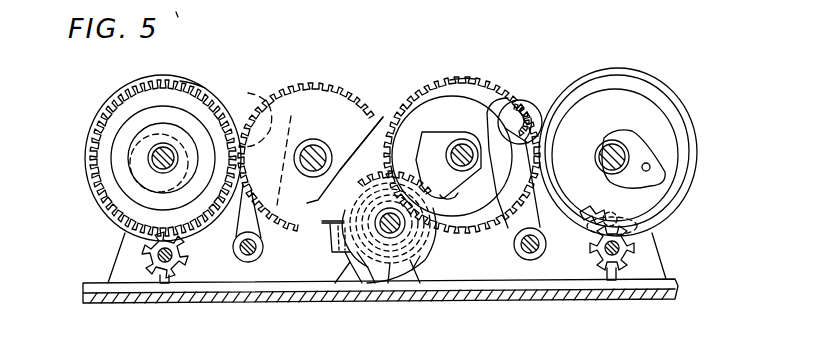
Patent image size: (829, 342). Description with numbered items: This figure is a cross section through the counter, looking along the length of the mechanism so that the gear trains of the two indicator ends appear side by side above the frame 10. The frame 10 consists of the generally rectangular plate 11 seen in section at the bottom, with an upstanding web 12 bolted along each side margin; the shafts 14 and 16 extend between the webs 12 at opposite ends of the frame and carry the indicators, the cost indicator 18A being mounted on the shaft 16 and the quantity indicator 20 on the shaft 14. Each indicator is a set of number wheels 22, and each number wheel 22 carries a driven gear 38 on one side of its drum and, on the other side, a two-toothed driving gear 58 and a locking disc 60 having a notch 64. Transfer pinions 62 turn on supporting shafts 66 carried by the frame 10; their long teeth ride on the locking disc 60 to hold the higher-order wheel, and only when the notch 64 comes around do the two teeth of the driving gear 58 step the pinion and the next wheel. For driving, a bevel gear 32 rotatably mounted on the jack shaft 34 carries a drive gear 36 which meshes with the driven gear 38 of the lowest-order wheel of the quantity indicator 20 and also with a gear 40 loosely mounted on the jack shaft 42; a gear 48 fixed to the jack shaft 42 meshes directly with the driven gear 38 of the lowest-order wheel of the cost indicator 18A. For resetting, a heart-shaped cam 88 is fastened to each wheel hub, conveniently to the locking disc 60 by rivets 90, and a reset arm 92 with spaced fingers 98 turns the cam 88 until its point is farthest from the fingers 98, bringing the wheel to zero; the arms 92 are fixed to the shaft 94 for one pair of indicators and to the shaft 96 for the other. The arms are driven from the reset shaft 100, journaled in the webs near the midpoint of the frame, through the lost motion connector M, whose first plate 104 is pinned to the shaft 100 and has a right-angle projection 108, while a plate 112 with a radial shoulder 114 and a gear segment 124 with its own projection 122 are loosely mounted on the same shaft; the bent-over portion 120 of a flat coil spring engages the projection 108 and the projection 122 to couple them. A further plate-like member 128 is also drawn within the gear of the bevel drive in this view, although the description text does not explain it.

The frame 10 is at (680, 289).
The plate 11 is at (538, 300).
The upstanding web 12 is at (657, 240).
The shaft 14 is at (600, 152).
The shaft 16 is at (150, 157).
The cost indicator 18A is at (99, 109).
The quantity indicator 20 is at (680, 102).
The number wheel 22 is at (124, 84).
The bevel gear 32 is at (438, 103).
The jack shaft 34 is at (462, 142).
The drive gear 36 is at (463, 78).
The driven gear 38 is at (190, 85).
The gear 40 is at (384, 114).
The jack shaft 42 is at (305, 144).
The gear 48 is at (276, 88).
The two-toothed driving gear 58 is at (582, 214).
The locking disc 60 is at (585, 97).
The transfer pinion 62 is at (146, 262).
The notch 64 is at (612, 216).
The supporting shaft 66 is at (157, 254).
The heart-shaped cam 88 is at (110, 178).
The rivet 90 is at (647, 163).
The reset arm 92 is at (256, 102).
The shaft 94 is at (514, 246).
The shaft 96 is at (240, 256).
The finger 98 is at (534, 112).
The reset shaft 100 is at (406, 237).
The first plate 104 is at (336, 290).
The projection 108 is at (346, 258).
The plate 112 is at (396, 292).
The shoulder 114 is at (380, 290).
The bent-over portion 120 is at (332, 219).
The projection 122 is at (328, 243).
The gear segment 124 is at (372, 176).
The cam plate 128 is at (452, 194).
The lost motion connector M is at (412, 272).